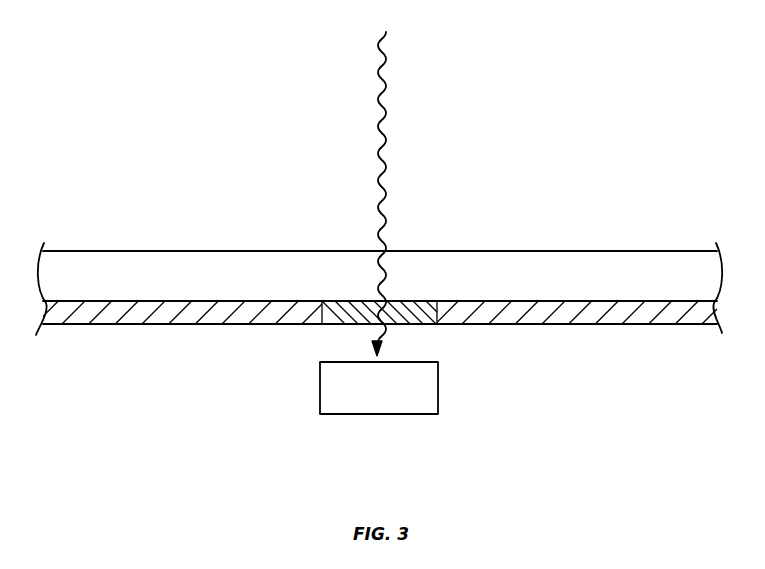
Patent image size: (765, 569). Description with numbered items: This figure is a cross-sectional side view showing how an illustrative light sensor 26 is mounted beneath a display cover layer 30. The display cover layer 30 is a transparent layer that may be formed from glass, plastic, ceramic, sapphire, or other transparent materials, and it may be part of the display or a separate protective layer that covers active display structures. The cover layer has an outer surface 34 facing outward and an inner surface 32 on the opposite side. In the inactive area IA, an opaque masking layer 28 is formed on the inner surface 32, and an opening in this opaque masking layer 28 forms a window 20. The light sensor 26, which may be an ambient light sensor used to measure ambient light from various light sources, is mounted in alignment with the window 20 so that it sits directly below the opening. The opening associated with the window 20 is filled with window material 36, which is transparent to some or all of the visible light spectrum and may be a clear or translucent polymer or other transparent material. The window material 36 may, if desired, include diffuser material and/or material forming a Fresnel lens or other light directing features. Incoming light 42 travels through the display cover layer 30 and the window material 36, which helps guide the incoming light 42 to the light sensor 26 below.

The window 20 is at (380, 285).
The light sensor 26 is at (398, 415).
The opaque masking layer 28 is at (138, 318).
The display cover layer 30 is at (380, 292).
The inner surface 32 is at (380, 300).
The outer surface 34 is at (101, 250).
The window material 36 is at (337, 325).
The incoming light 42 is at (384, 103).
The inactive area IA is at (630, 100).